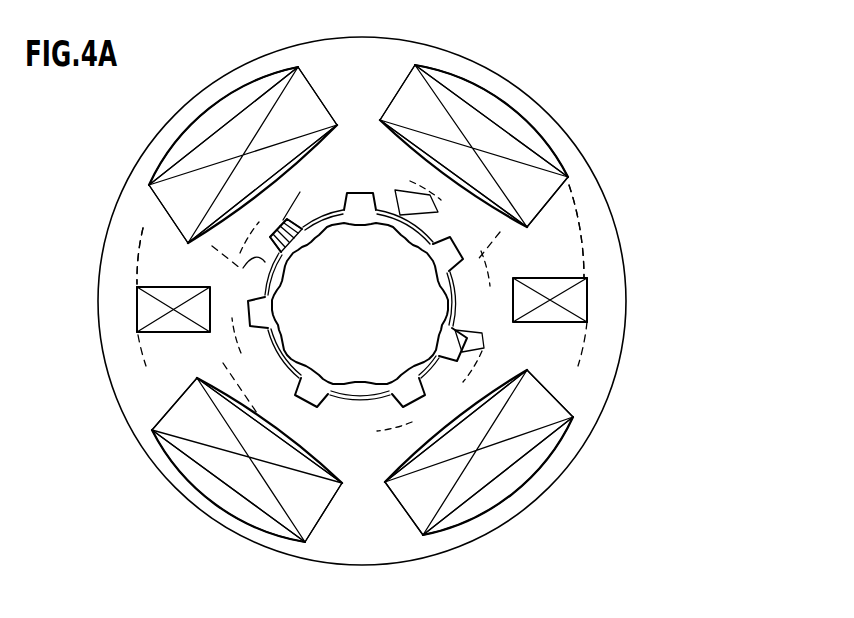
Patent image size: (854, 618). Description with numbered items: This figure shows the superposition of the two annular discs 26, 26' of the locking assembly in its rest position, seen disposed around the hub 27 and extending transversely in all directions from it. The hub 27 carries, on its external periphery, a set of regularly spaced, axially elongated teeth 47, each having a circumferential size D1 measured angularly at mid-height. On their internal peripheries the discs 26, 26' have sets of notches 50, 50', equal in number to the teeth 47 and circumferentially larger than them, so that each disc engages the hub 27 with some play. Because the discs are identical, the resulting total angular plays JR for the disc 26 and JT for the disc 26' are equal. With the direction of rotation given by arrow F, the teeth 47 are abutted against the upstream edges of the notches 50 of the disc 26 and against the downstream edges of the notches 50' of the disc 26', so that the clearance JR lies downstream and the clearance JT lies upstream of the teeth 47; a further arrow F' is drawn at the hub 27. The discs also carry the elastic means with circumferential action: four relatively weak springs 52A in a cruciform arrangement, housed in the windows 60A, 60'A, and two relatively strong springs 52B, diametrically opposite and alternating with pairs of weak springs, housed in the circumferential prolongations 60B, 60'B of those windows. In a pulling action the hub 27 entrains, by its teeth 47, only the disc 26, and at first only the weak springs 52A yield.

The disc 26 is at (362, 301).
The disc 26' is at (357, 58).
The hub 27 is at (372, 408).
The teeth 47 is at (266, 215).
The notches 50 is at (447, 280).
The notches 50' is at (381, 306).
The relatively weak springs 52A is at (209, 136).
The relatively strong springs 52B is at (144, 319).
The window 60A is at (300, 90).
The window 60'A is at (391, 309).
The circumferential prolongation 60B is at (158, 294).
The circumferential prolongation 60'B is at (364, 232).
The circumferential size of teeth D1 is at (298, 258).
The total angular play JT is at (301, 196).
The total angular play JR is at (239, 272).
The arrow indicating direction of rotation F is at (512, 52).
The arrow F' is at (375, 242).